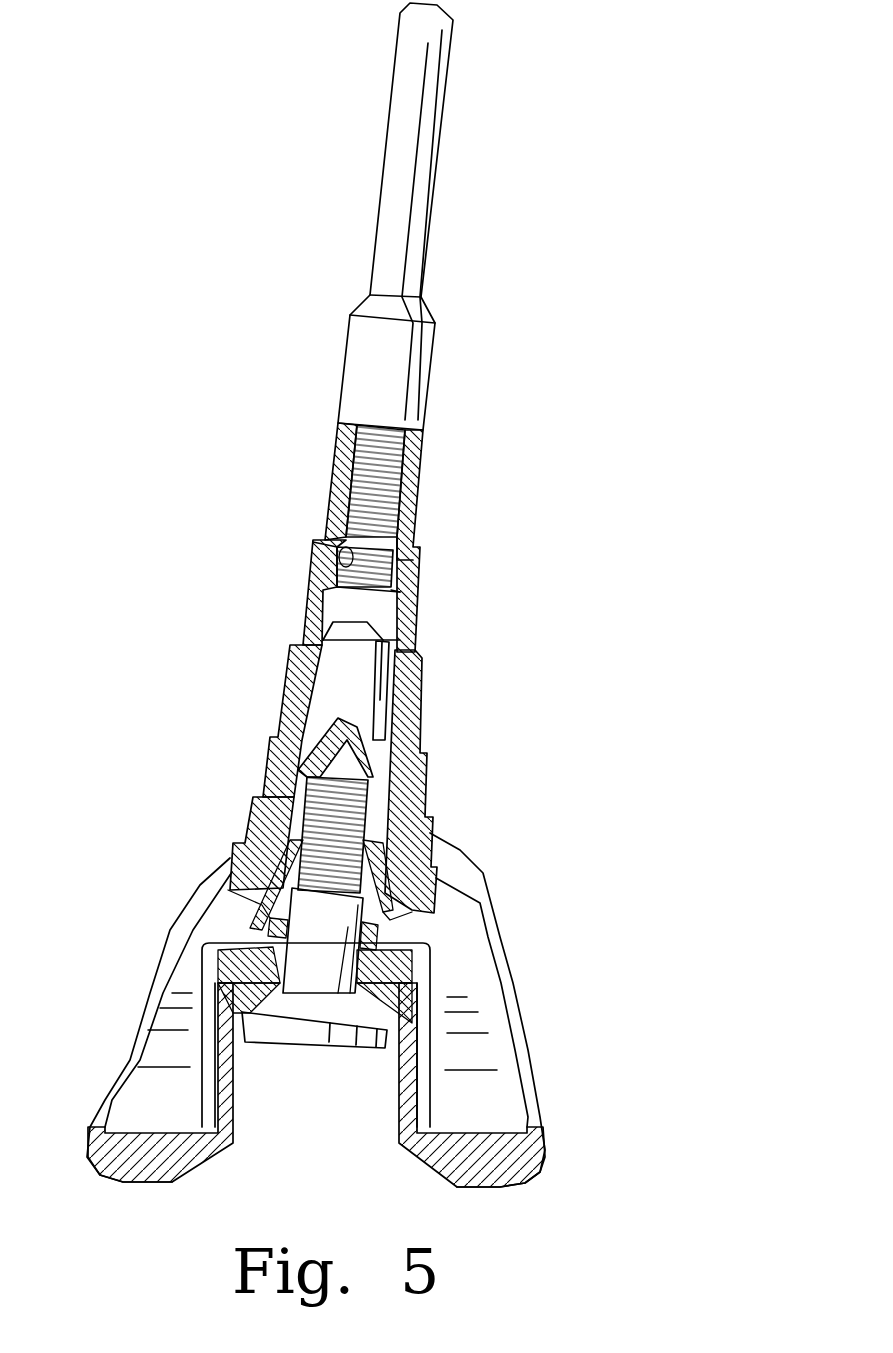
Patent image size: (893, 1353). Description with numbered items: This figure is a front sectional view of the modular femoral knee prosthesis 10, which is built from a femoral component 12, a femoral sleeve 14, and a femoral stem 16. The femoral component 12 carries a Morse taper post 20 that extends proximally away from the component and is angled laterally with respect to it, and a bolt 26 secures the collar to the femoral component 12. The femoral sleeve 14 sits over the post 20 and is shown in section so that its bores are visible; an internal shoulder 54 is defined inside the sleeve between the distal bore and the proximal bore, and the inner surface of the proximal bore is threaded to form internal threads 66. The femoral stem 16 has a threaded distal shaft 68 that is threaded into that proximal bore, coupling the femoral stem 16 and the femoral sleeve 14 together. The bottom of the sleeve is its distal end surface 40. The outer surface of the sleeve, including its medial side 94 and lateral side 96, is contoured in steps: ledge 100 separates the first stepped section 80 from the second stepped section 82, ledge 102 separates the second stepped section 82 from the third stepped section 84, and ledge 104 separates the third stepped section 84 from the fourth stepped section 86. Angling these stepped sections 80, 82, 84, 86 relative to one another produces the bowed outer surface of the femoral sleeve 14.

The modular femoral knee prosthesis 10 is at (306, 595).
The femoral component 12 is at (152, 912).
The femoral sleeve 14 is at (264, 696).
The femoral stem 16 is at (478, 218).
The Morse taper post 20 is at (418, 667).
The bolt 26 is at (297, 1034).
The distal end surface 40 is at (420, 912).
The internal shoulder 54 is at (313, 578).
The internal threads 66 is at (315, 553).
The threaded distal shaft 68 is at (340, 445).
The first stepped section 80 is at (413, 843).
The second stepped section 82 is at (417, 725).
The third stepped section 84 is at (415, 602).
The fourth stepped section 86 is at (425, 460).
The medial side 94 is at (470, 535).
The lateral side 96 is at (326, 524).
The ledge 100 is at (257, 791).
The ledge 102 is at (417, 650).
The ledge 104 is at (414, 547).